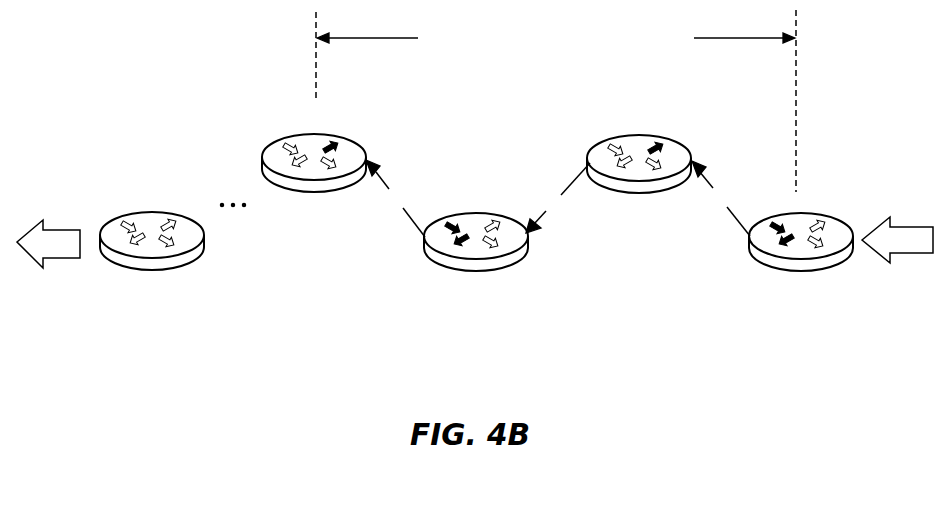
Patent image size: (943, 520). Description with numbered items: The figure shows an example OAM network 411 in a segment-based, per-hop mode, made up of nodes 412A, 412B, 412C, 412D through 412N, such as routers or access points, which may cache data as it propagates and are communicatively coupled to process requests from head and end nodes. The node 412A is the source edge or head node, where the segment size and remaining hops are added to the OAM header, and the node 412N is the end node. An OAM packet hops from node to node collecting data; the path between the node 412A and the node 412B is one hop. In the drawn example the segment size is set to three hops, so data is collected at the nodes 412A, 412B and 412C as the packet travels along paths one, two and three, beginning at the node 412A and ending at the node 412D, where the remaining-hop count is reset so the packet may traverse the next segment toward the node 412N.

The OAM network 411 is at (120, 57).
The node 412A is at (801, 258).
The node 412B is at (639, 183).
The node 412C is at (476, 258).
The node 412D is at (314, 182).
The node 412N is at (152, 263).